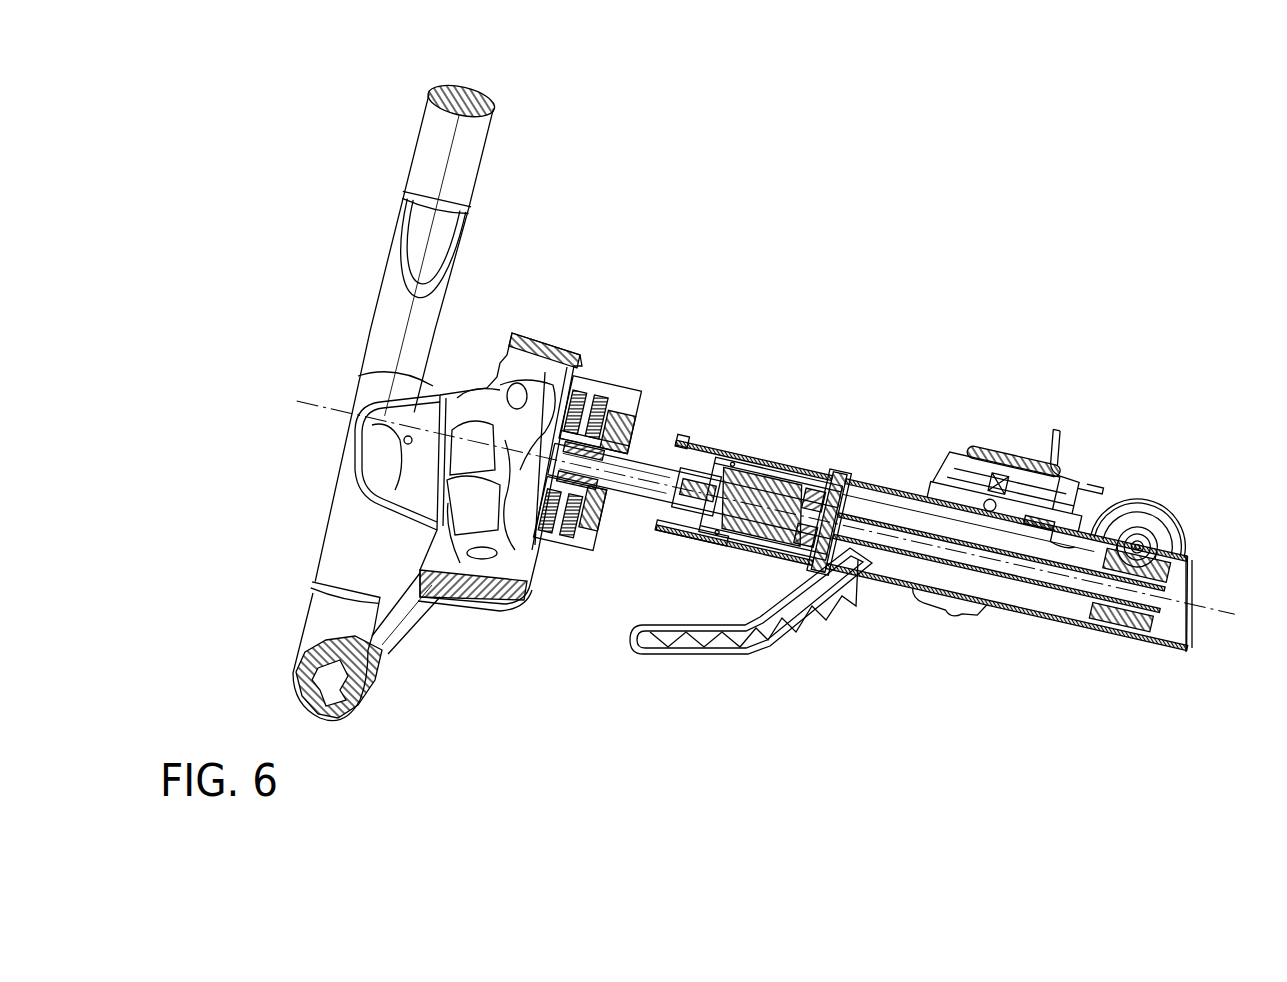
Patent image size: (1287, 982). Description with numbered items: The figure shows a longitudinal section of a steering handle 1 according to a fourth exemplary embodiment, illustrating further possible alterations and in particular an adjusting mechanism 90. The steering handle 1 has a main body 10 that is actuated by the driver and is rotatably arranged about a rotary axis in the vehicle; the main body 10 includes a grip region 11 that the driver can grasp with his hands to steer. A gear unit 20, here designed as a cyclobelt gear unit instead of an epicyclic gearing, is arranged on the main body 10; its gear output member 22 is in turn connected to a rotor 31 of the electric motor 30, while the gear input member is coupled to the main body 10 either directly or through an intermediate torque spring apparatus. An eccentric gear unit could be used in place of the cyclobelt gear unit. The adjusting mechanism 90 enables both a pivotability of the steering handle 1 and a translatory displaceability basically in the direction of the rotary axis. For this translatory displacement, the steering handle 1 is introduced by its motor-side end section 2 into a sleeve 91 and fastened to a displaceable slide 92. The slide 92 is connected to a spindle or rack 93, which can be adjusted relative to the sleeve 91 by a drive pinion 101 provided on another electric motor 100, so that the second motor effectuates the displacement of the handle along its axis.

The steering handle 1 is at (796, 439).
The main body 10 is at (393, 394).
The grip region 11 is at (465, 173).
The gear unit 20 is at (596, 397).
The gear output member 22 is at (572, 482).
The motor-side end section 2 is at (768, 487).
The rotor 31 is at (700, 493).
The electric motor 30 is at (737, 503).
The adjusting mechanism 90 is at (937, 588).
The sleeve 91 is at (832, 478).
The displaceable slide 92 is at (840, 516).
The spindle or rack 93 is at (1068, 590).
The electric motor 100 is at (1165, 522).
The drive pinion 101 is at (1137, 547).